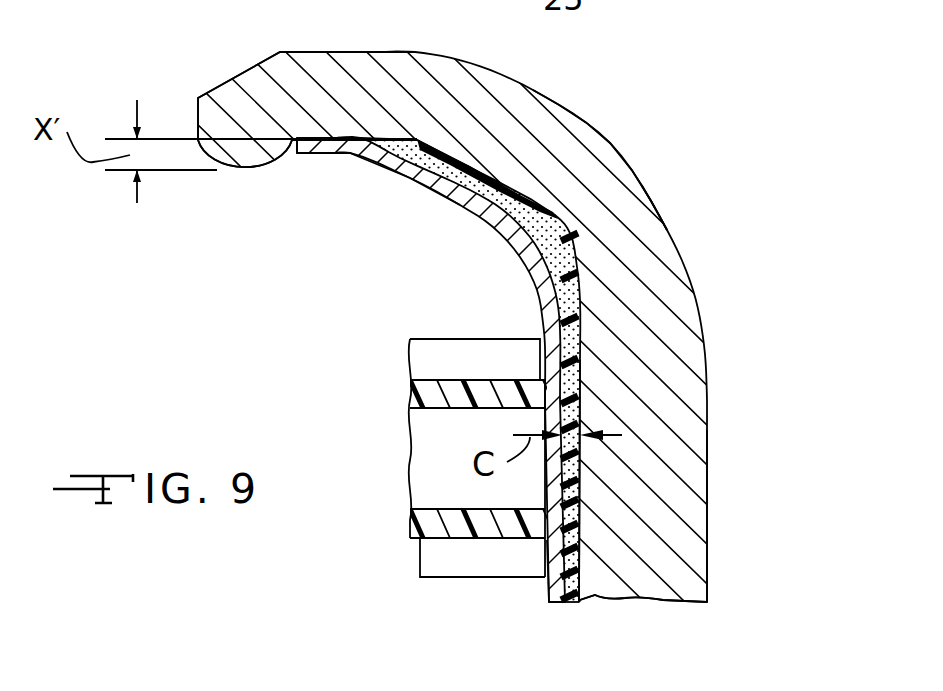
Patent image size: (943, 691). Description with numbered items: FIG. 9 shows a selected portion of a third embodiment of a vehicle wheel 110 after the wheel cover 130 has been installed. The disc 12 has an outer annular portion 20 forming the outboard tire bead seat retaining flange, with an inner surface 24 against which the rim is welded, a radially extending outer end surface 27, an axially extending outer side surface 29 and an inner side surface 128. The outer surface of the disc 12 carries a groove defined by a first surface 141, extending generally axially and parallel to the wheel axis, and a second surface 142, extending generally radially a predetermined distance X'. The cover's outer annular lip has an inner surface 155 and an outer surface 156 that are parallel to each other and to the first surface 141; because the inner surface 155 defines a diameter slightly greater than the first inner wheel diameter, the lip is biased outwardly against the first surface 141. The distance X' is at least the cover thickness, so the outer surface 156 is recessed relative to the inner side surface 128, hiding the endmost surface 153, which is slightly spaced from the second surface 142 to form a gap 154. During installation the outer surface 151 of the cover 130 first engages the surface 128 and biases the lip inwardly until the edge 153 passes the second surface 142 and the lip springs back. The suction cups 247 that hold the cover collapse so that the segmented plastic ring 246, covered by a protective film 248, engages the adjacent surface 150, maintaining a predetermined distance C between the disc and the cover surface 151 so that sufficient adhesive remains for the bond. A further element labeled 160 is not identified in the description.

The disc 12 is at (710, 386).
The outboard tire bead seat retaining flange 20 is at (617, 143).
The inner surface 24 is at (707, 560).
The outer end surface 27 is at (197, 120).
The outer side surface 29 is at (325, 52).
The vehicle wheel 110 is at (665, 193).
The inner side surface 128 is at (225, 168).
The wheel cover 130 is at (522, 290).
The first surface 141 is at (412, 170).
The second surface 142 is at (278, 167).
The adjacent surface 150 is at (545, 600).
The outer surface 151 is at (600, 596).
The endmost surface 153 is at (296, 153).
The gap 154 is at (294, 163).
The inner surface 155 is at (352, 137).
The outer surface 156 is at (323, 155).
The inner wall surface 160 is at (572, 524).
The segmented annular plastic ring 246 is at (438, 577).
The suction cups 247 is at (442, 508).
The protective film 248 is at (547, 583).